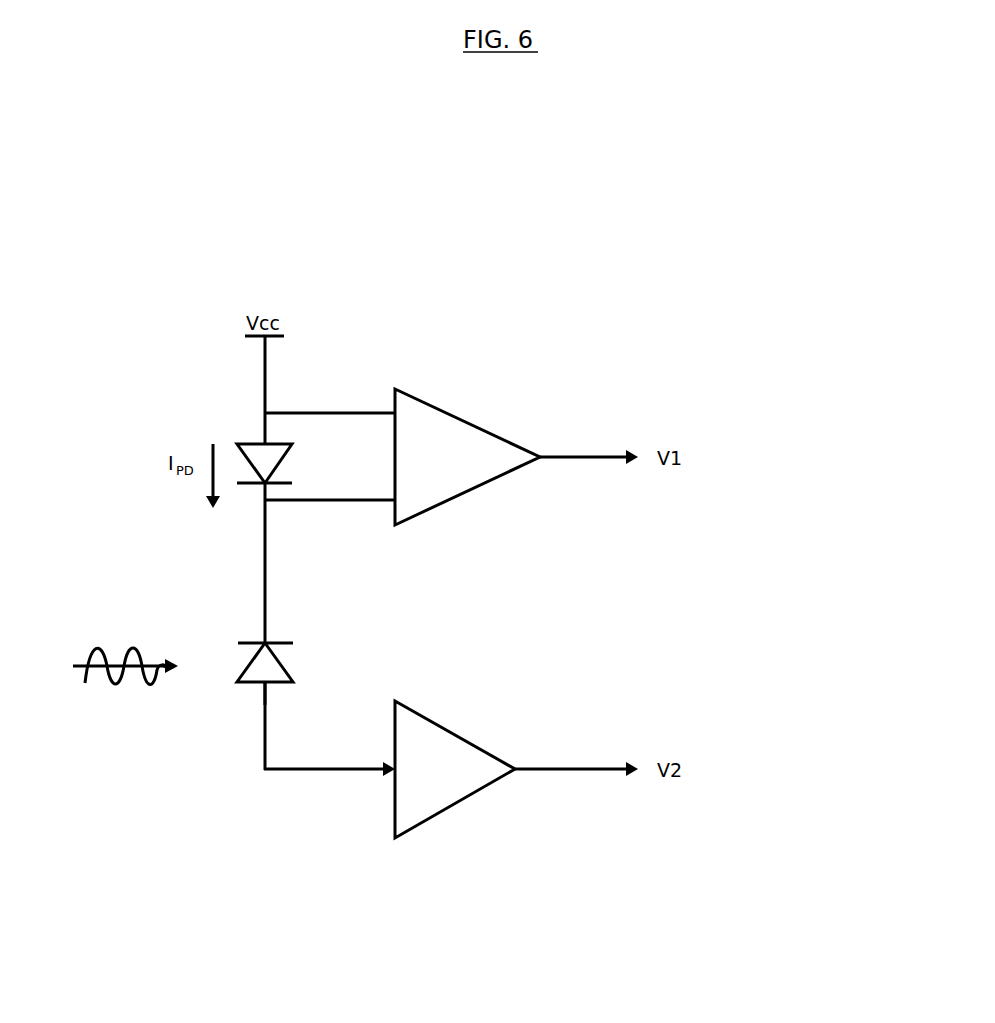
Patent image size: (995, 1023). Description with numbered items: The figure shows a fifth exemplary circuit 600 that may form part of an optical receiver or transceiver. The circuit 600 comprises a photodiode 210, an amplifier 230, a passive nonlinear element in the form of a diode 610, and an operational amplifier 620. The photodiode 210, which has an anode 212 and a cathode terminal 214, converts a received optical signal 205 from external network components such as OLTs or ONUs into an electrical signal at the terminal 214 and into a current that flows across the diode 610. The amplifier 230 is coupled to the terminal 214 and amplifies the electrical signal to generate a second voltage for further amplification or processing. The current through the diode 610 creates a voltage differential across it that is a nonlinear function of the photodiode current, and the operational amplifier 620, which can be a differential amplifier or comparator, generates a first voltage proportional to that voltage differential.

The circuit 600 is at (637, 320).
The diode 610 is at (283, 462).
The operational amplifier 620 is at (441, 405).
The optical signal 205 is at (117, 648).
The photodiode 210 is at (278, 660).
The anode 212 is at (268, 641).
The cathode terminal 214 is at (258, 690).
The amplifier 230 is at (471, 738).